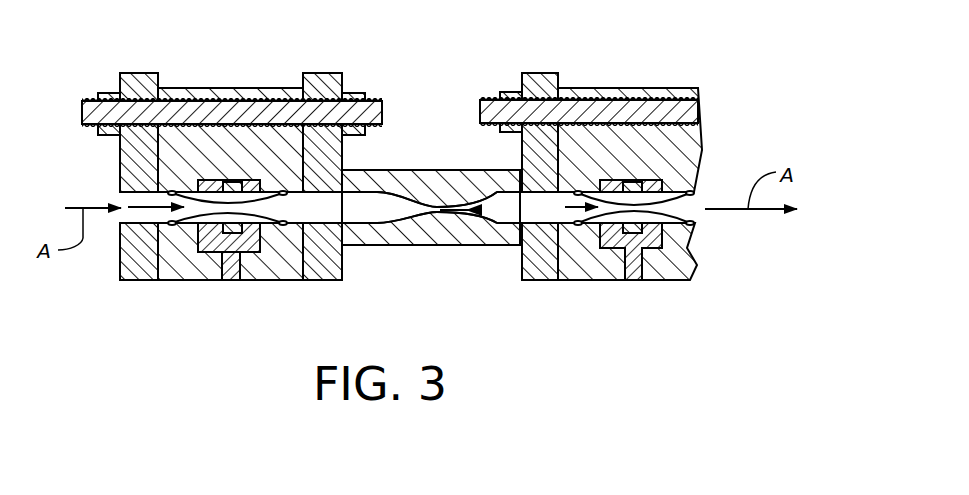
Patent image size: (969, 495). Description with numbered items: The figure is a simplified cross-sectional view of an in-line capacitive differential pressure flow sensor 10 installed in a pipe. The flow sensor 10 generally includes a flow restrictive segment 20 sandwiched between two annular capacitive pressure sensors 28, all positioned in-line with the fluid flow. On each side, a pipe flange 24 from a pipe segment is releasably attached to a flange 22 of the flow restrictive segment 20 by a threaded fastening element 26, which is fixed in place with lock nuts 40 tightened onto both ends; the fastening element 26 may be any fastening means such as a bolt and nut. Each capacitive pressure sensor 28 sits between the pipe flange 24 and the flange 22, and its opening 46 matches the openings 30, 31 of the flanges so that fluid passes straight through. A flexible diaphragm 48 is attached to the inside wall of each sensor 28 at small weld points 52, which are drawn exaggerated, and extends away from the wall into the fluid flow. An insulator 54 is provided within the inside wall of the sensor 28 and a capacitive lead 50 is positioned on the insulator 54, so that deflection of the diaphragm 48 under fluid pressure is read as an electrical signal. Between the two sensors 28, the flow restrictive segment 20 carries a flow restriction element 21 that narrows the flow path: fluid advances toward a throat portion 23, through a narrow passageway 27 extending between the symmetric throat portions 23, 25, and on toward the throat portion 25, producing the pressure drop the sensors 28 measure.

The flow sensor 10 is at (676, 86).
The flow restrictive segment 20 is at (394, 168).
The flow restriction element 21 is at (437, 215).
The flange 22 is at (331, 75).
The throat portion 23 is at (380, 210).
The pipe flange 24 is at (136, 76).
The throat portion 25 is at (497, 225).
The fastening element 26 is at (262, 108).
The narrow passageway 27 is at (497, 172).
The capacitive pressure sensor 28 is at (208, 86).
The opening 30 is at (122, 212).
The opening 31 is at (336, 208).
The lock nut 40 is at (110, 94).
The opening 46 is at (128, 207).
The flexible diaphragm 48 is at (703, 208).
The capacitive lead 50 is at (199, 226).
The weld point 52 is at (198, 181).
The insulator 54 is at (224, 240).